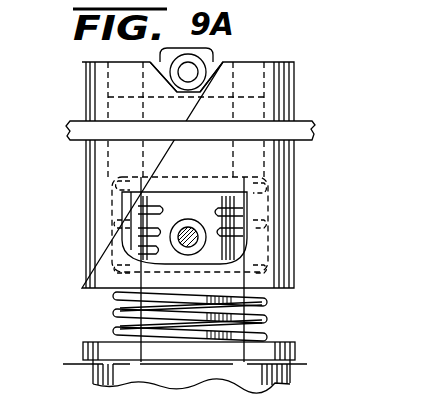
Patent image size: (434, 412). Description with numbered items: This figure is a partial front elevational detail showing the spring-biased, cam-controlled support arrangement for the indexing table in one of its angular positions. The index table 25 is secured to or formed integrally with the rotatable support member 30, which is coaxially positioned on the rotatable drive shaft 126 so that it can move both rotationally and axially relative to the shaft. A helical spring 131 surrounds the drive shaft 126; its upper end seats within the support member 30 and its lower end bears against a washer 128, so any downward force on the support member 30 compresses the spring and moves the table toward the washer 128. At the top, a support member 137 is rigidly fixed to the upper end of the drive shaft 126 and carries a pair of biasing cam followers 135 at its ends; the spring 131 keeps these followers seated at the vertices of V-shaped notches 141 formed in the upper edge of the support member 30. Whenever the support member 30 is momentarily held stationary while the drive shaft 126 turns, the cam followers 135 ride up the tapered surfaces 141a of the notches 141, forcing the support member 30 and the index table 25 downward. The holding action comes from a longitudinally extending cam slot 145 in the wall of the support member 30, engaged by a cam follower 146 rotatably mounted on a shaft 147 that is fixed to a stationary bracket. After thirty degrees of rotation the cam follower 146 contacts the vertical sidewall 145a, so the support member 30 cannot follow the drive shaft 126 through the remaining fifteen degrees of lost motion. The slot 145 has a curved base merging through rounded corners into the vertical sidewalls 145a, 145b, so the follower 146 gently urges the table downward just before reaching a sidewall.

The index table 25 is at (80, 128).
The rotatable support member 30 is at (280, 167).
The rotatable drive shaft 126 is at (114, 303).
The washer 128 is at (86, 349).
The helical spring 131 is at (266, 306).
The biasing cam followers 135 is at (188, 91).
The support member for cam followers 137 is at (160, 55).
The V-shaped notches 141 is at (213, 66).
The tapered surfaces 141a is at (158, 70).
The cam slot 145 is at (122, 247).
The vertical sidewall 145a is at (248, 218).
The vertical sidewall 145b is at (130, 213).
The cam follower 146 is at (192, 219).
The shaft 147 is at (181, 230).